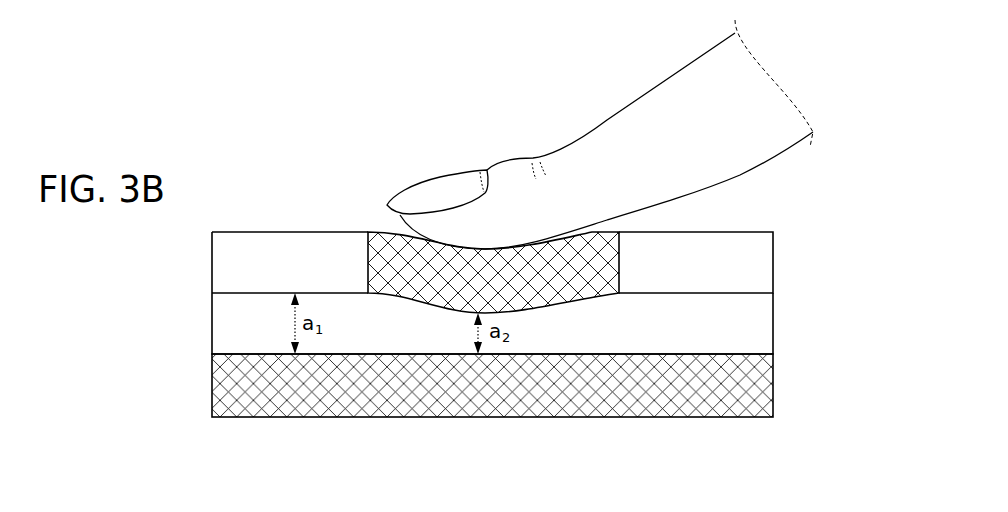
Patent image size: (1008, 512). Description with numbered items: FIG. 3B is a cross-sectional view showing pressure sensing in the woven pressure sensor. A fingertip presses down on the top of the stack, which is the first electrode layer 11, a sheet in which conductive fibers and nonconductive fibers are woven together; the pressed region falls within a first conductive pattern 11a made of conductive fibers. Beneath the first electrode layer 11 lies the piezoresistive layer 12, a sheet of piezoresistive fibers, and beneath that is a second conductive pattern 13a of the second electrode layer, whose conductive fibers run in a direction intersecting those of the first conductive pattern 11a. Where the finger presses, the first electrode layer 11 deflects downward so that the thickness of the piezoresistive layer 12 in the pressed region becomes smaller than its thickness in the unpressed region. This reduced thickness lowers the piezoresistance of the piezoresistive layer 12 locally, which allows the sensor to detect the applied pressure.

The first electrode layer 11 is at (758, 262).
The first conductive pattern 11a is at (378, 266).
The piezoresistive layer 12 is at (774, 323).
The second conductive pattern 13a is at (774, 383).